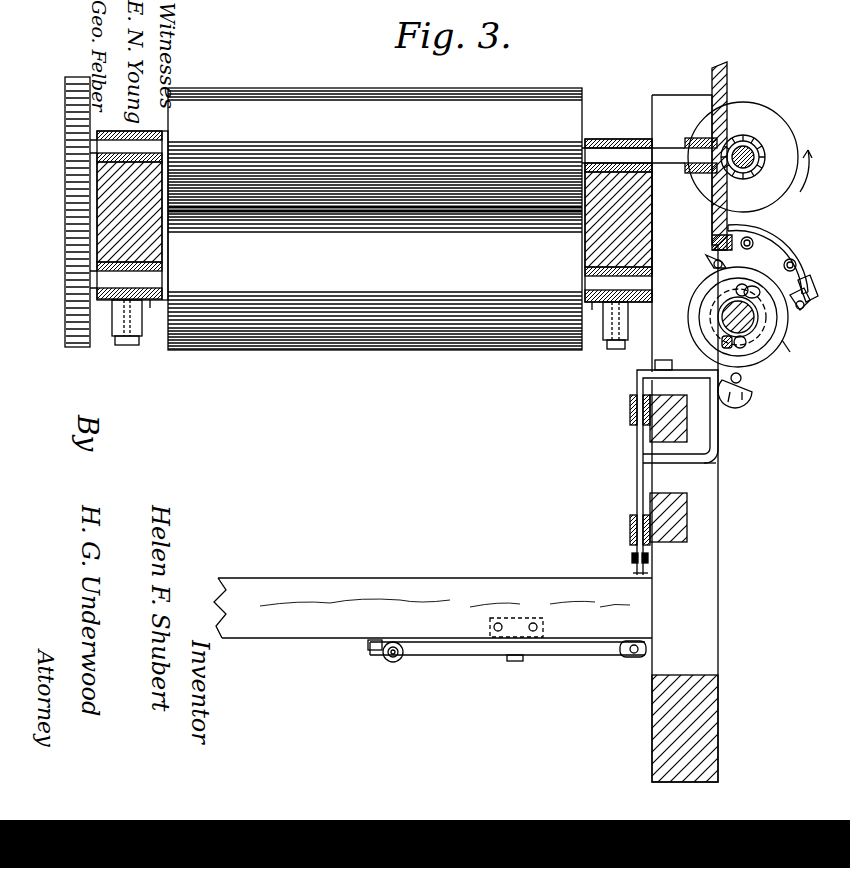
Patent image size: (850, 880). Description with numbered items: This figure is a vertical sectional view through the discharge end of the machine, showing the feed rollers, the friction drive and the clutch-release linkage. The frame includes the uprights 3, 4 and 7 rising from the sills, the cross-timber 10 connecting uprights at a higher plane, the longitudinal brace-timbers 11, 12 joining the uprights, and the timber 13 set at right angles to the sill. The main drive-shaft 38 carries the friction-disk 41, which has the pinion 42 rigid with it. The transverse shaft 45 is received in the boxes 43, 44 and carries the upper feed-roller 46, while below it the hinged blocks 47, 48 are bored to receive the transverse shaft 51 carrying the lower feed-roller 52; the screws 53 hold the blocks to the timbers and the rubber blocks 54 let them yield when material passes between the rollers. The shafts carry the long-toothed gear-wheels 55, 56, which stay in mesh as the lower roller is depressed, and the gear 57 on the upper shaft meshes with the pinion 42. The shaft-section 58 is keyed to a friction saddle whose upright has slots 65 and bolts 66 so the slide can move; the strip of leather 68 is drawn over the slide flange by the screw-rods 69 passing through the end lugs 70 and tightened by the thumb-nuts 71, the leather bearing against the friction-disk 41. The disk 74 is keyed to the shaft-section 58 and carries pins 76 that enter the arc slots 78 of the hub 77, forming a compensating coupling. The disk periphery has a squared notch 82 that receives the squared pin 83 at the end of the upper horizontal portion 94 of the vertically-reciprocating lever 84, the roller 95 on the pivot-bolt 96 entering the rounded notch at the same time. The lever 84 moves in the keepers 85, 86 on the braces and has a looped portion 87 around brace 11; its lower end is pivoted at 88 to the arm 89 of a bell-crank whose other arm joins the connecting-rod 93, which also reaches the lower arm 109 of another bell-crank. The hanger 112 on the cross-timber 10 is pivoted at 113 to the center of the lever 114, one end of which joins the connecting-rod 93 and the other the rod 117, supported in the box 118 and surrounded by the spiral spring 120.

The upright 3 is at (135, 205).
The upright 4 is at (685, 438).
The upright 7 is at (685, 728).
The cross-timber 10 is at (392, 582).
The longitudinal brace-timber 11 is at (668, 418).
The longitudinal brace-timber 12 is at (668, 517).
The timber 13 is at (618, 219).
The main drive-shaft 38 is at (738, 155).
The friction-disk 41 is at (755, 112).
The pinion 42 is at (745, 146).
The box 43 is at (612, 131).
The box 44 is at (143, 132).
The transverse shaft 45 is at (633, 152).
The feed-roller 46 is at (375, 219).
The hinged block 47 is at (592, 304).
The hinged block 48 is at (152, 308).
The transverse shaft 51 is at (618, 284).
The feed-roller 52 is at (375, 309).
The screw 53 is at (120, 345).
The rubber block 54 is at (136, 336).
The gear-wheel 55 is at (65, 120).
The gear-wheel 56 is at (65, 270).
The gear 57 is at (727, 88).
The shaft-section 58 is at (754, 312).
The vertical slot 65 is at (750, 237).
The screw or bolt 66 is at (752, 237).
The strip of leather 68 is at (773, 249).
The screw-rod 69 is at (815, 289).
The end lug 70 is at (722, 310).
The thumb-nut 71 is at (706, 262).
The disk 74 is at (780, 338).
The laterally-projecting pin 76 is at (710, 282).
The hub 77 is at (700, 327).
The arc slot 78 is at (738, 290).
The squared notch 82 is at (742, 378).
The squared pin 83 is at (752, 388).
The vertically-reciprocating lever 84 is at (637, 459).
The keeper 85 is at (630, 412).
The keeper 86 is at (630, 528).
The looped portion 87 is at (718, 457).
The pivot 88 is at (632, 558).
The arm of bell-crank lever 89 is at (632, 568).
The connecting-rod 93 is at (632, 660).
The upper horizontal portion 94 is at (661, 357).
The roller 95 is at (744, 396).
The pivot-bolt 96 is at (734, 396).
The lower arm 109 is at (648, 575).
The hanger 112 is at (518, 645).
The pivot 113 is at (512, 661).
The lever 114 is at (580, 656).
The rod 117 is at (392, 664).
The box 118 is at (374, 652).
The spiral spring 120 is at (404, 656).